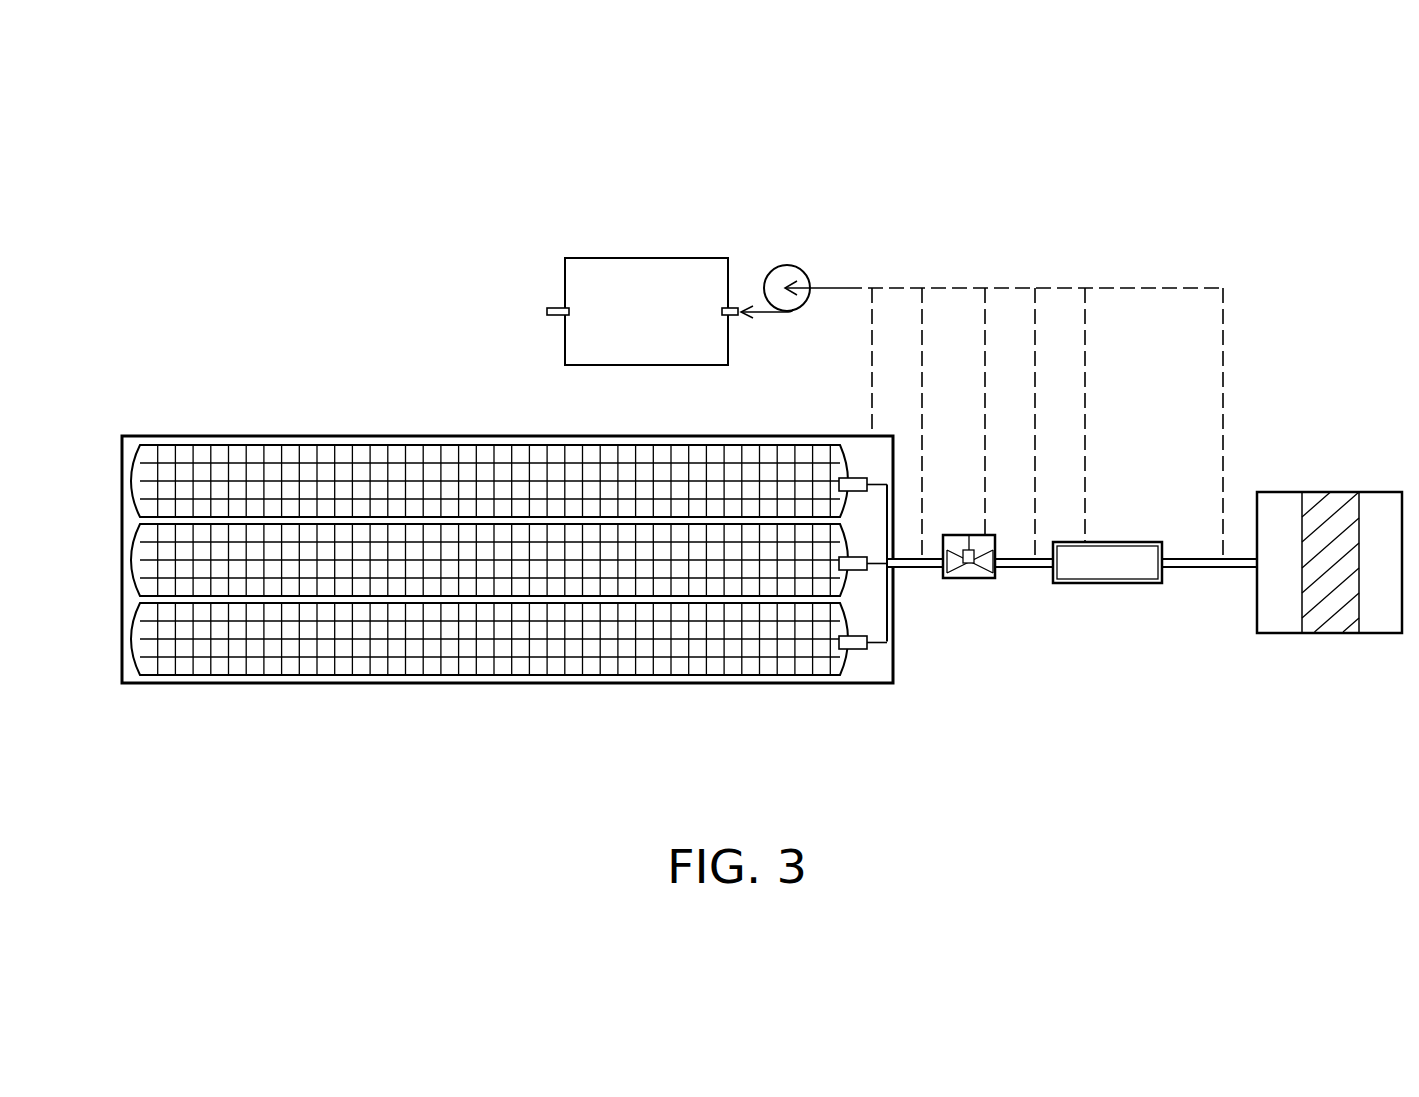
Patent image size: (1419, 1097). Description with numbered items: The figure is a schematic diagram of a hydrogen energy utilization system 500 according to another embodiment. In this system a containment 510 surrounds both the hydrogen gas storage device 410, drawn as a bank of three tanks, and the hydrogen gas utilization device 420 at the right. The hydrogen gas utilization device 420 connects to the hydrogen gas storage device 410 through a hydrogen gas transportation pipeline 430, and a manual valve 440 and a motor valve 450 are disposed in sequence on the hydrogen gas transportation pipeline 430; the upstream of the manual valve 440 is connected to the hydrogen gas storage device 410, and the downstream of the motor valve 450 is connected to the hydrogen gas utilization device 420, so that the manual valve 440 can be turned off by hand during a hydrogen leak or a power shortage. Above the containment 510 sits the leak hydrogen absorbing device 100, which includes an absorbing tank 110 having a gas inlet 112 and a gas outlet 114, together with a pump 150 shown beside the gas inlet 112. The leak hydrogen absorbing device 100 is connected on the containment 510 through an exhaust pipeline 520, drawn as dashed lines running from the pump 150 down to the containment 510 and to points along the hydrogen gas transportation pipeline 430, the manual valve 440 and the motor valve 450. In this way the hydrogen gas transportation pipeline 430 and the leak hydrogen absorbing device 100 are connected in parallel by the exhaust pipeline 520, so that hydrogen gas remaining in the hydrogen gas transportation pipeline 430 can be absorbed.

The leak hydrogen absorbing device 100 is at (691, 195).
The absorbing tank 110 is at (620, 258).
The gas inlet 112 is at (735, 307).
The gas outlet 114 is at (553, 308).
The pump 150 is at (790, 270).
The hydrogen gas storage device 410 is at (483, 658).
The hydrogen gas utilization device 420 is at (1335, 617).
The hydrogen gas transportation pipeline 430 is at (1200, 557).
The manual valve 440 is at (969, 580).
The motor valve 450 is at (1105, 583).
The hydrogen energy utilization system 500 is at (1088, 822).
The containment 510 is at (702, 554).
The exhaust pipeline 520 is at (1154, 287).